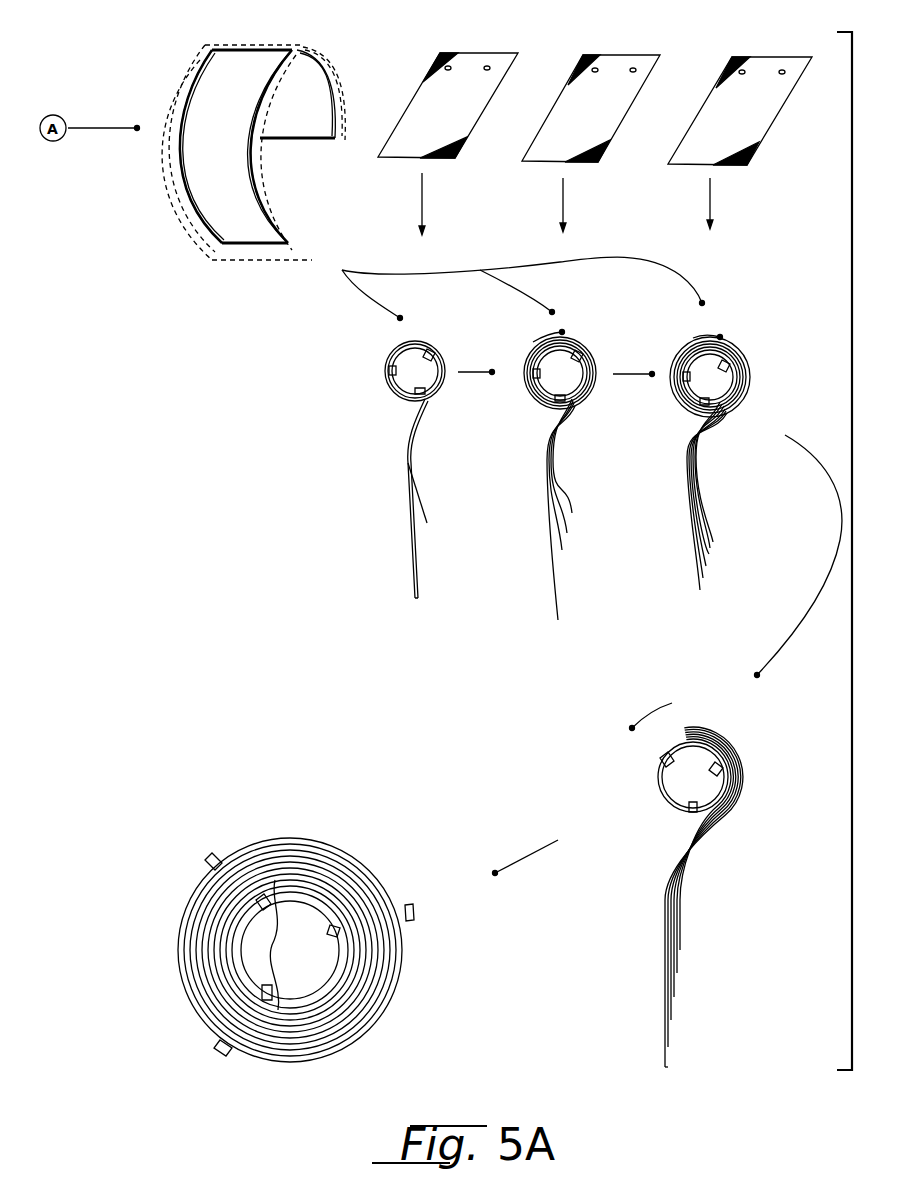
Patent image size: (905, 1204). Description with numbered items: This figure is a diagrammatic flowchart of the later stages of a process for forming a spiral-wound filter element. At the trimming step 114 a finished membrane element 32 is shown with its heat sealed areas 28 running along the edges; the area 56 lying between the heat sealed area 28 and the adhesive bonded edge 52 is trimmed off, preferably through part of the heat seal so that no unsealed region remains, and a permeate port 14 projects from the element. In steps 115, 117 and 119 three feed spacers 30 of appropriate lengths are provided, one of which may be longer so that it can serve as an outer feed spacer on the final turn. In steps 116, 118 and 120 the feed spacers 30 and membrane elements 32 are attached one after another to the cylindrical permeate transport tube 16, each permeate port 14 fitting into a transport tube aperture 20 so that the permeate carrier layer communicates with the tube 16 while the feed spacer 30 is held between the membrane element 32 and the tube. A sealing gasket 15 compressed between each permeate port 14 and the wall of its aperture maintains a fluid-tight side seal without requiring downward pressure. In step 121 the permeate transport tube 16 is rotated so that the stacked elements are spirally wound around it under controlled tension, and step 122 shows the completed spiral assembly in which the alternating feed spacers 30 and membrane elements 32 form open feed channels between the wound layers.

The permeate port 14 is at (312, 128).
The sealing gasket 15 is at (263, 897).
The permeate transport tube 16 is at (398, 393).
The transport tube aperture 20 is at (430, 355).
The heat sealed area 28 is at (177, 147).
The feed spacer 30 is at (452, 115).
The membrane element 32 is at (224, 170).
The adhesive bonded edge 52 is at (180, 203).
The trimmed area 56 is at (173, 88).
The trimming step 114 is at (272, 33).
The feed spacer providing step 115 is at (495, 38).
The attachment step 116 is at (441, 327).
The feed spacer providing step 117 is at (637, 38).
The attachment step 118 is at (605, 330).
The feed spacer providing step 119 is at (787, 41).
The attachment step 120 is at (762, 333).
The spiral winding step 121 is at (720, 708).
The completed spiral assembly 122 is at (311, 812).